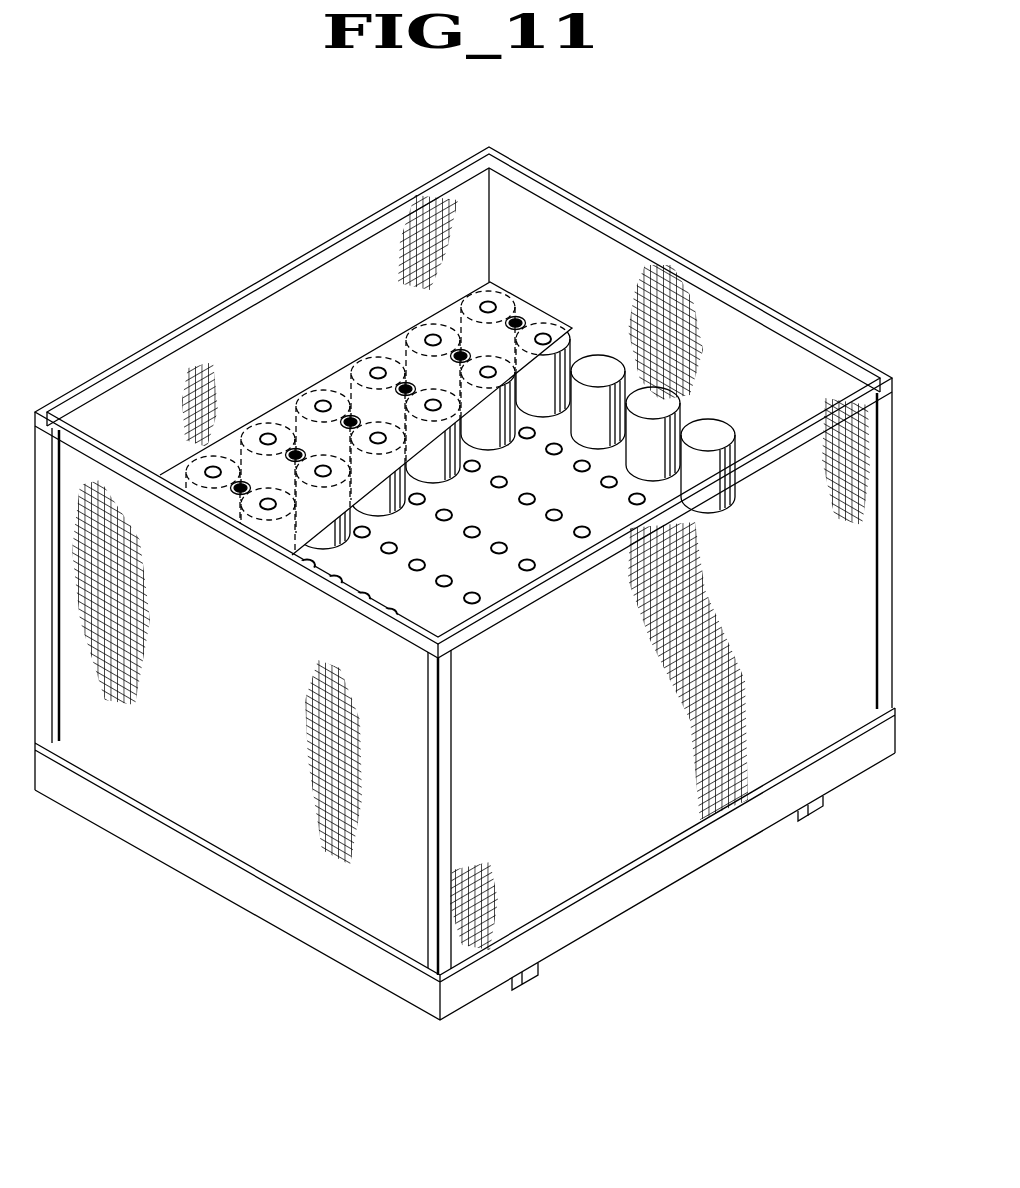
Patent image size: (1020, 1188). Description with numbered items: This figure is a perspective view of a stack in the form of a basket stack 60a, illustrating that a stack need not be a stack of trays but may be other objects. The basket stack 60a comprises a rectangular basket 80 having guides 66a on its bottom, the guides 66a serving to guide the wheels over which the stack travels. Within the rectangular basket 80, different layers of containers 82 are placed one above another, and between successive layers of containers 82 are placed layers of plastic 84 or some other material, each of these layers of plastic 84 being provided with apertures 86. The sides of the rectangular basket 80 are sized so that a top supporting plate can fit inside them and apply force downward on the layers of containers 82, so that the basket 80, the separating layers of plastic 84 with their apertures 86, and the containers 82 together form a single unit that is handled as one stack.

The basket stack 60a is at (465, 583).
The rectangular basket 80 is at (666, 822).
The containers 82 is at (316, 386).
The layers of plastic 84 is at (527, 304).
The apertures 86 is at (405, 380).
The guides 66a is at (526, 984).